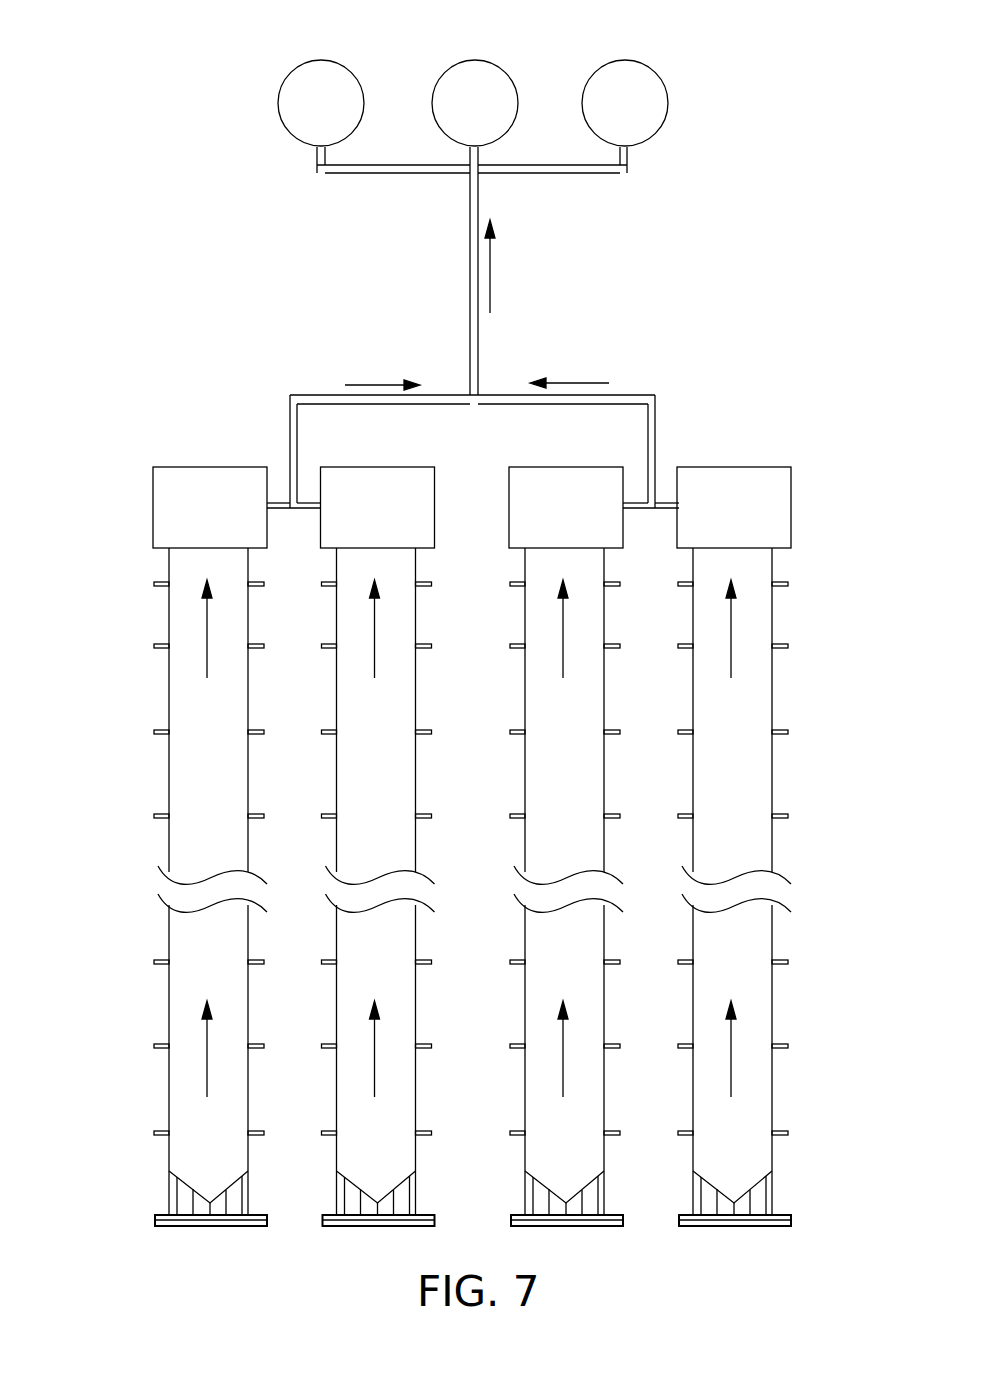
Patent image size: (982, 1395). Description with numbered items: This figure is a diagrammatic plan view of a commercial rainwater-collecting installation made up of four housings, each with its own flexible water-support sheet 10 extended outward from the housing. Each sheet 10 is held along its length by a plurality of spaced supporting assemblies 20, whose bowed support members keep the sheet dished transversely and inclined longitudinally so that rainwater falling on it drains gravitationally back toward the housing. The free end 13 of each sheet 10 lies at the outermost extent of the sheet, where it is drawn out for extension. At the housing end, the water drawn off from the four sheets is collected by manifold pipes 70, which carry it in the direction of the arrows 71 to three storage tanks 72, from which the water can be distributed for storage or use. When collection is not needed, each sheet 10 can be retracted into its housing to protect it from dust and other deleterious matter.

The water-support sheet 10 is at (155, 701).
The free end of the sheet 13 is at (343, 1160).
The supporting assembly 20 is at (155, 732).
The manifold pipe 70 is at (287, 450).
The arrow 71 is at (393, 395).
The storage tank 72 is at (612, 68).